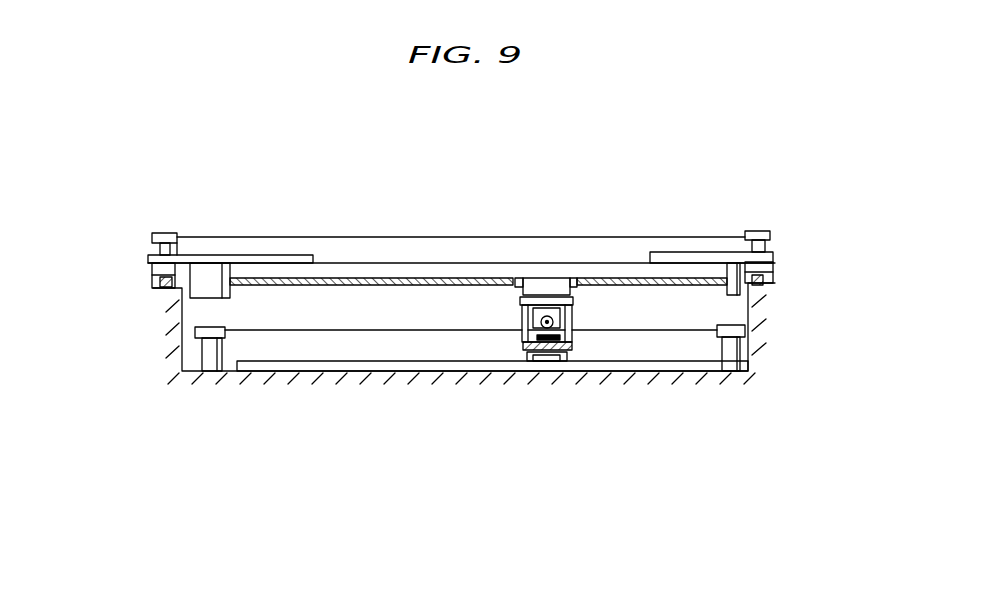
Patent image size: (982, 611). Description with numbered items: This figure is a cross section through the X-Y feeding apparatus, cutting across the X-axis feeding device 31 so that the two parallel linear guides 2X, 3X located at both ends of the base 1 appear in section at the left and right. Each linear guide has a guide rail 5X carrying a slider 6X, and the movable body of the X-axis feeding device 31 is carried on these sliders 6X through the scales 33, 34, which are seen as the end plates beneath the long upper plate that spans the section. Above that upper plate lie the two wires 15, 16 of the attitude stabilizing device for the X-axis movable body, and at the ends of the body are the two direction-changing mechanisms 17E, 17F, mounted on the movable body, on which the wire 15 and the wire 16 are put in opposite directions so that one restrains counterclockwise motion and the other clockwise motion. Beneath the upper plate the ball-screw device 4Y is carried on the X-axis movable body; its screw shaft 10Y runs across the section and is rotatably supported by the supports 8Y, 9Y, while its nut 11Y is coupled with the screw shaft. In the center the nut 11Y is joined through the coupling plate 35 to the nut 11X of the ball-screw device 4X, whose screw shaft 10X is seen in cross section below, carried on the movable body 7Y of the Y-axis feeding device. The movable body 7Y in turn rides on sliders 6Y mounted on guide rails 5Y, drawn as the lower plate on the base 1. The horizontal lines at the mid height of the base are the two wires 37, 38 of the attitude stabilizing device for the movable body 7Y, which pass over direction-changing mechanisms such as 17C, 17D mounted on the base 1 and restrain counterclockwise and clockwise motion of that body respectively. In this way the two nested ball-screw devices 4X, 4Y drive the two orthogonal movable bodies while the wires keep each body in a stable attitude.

The base 1 is at (690, 373).
The linear guide 2X is at (122, 279).
The linear guide 3X is at (798, 276).
The ball-screw device 4X is at (561, 390).
The ball-screw device 4Y is at (521, 239).
The guide rail 5X is at (160, 284).
The guide rail 5Y is at (315, 371).
The slider 6X is at (153, 268).
The slider 6Y is at (555, 363).
The movable body 7Y is at (572, 350).
The support 8Y is at (740, 293).
The support 9Y is at (235, 298).
The screw shaft 10X is at (532, 361).
The screw shaft 10Y is at (458, 280).
The nut 11X is at (520, 312).
The nut 11Y is at (533, 290).
The wire 15 is at (461, 213).
The wire 16 is at (365, 237).
The direction-changing mechanism 17C is at (732, 373).
The direction-changing mechanism 17D is at (212, 373).
The direction-changing mechanism 17E is at (163, 233).
The direction-changing mechanism 17F is at (757, 231).
The X-axis feeding device 31 is at (486, 304).
The scale 33 is at (268, 262).
The scale 34 is at (670, 252).
The coupling plate 35 is at (575, 300).
The wire 37 is at (418, 330).
The wire 38 is at (643, 328).